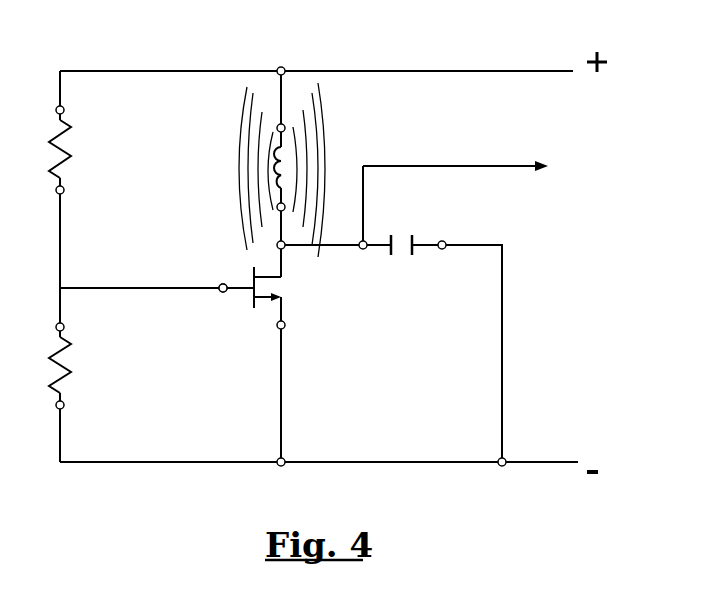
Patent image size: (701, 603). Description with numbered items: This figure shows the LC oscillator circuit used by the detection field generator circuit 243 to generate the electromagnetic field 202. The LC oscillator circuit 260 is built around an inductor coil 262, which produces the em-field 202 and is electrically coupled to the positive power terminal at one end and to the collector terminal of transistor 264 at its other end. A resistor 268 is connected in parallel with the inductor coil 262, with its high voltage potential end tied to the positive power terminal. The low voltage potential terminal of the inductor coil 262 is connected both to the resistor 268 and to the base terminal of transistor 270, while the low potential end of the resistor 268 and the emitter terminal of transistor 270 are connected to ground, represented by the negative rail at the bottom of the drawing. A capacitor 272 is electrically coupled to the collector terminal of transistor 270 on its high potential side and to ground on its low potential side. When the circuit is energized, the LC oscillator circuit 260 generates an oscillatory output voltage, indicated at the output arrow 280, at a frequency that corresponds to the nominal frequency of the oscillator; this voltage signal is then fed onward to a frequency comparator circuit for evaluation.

The detection field generator circuit 243 is at (328, 285).
The electromagnetic field 202 is at (322, 153).
The inductor coil 262 is at (270, 118).
The transistor 264 is at (275, 272).
The resistor 268 is at (87, 256).
The transistor 270 is at (232, 293).
The LC oscillator circuit 260 is at (341, 253).
The capacitor 272 is at (401, 250).
The oscillatory output voltage 280 is at (471, 166).